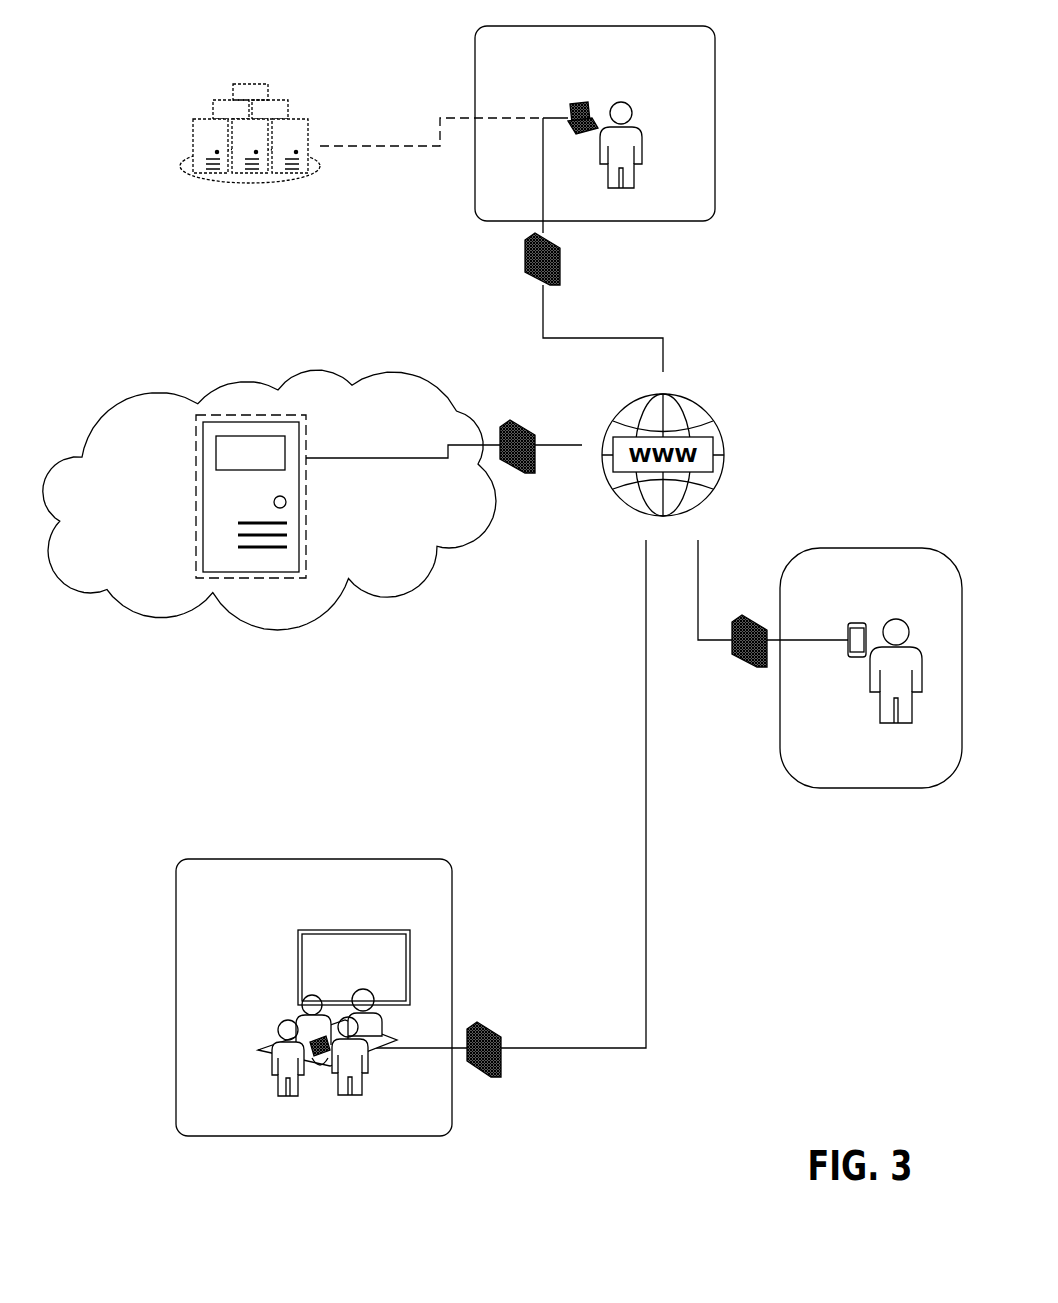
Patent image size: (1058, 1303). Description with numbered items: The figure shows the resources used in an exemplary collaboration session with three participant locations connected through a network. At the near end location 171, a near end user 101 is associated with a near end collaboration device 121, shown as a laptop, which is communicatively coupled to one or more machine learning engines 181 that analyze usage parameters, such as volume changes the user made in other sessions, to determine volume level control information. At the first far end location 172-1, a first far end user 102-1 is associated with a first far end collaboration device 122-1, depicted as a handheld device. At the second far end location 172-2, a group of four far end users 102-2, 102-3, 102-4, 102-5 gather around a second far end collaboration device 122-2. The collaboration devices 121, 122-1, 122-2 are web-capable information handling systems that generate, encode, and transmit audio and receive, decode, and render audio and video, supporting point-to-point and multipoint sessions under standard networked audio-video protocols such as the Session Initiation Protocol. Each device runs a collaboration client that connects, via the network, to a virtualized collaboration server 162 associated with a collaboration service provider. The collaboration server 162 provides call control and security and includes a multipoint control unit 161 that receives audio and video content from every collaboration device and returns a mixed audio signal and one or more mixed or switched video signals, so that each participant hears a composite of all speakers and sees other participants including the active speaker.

The machine learning engine 181 is at (243, 185).
The near end location 171 is at (680, 222).
The near end collaboration device 121 is at (580, 103).
The near end user 101 is at (641, 131).
The multipoint control unit (MCU) 161 is at (253, 470).
The virtualized collaboration server 162 is at (251, 513).
The first far end location 172-1 is at (902, 788).
The first far end collaboration device 122-1 is at (857, 622).
The first far end user 102-1 is at (905, 723).
The second far end location 172-2 is at (432, 1136).
The far end user 102-2 is at (278, 1082).
The far end user 102-3 is at (366, 1090).
The far end user 102-4 is at (381, 1031).
The far end user 102-5 is at (296, 1020).
The second far end collaboration device 122-2 is at (323, 1062).